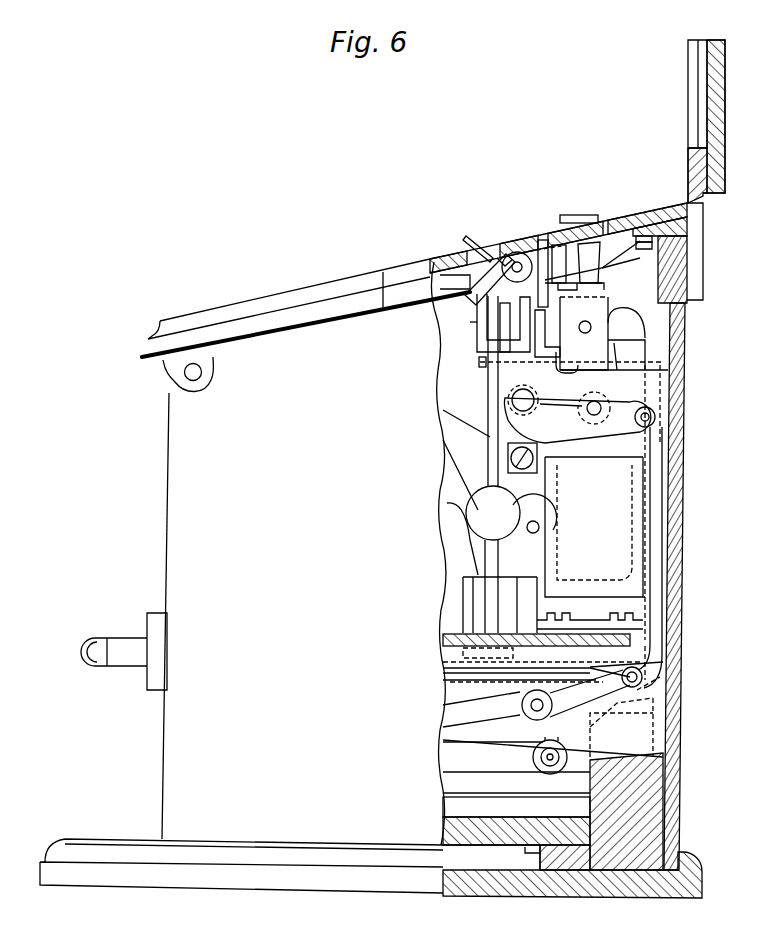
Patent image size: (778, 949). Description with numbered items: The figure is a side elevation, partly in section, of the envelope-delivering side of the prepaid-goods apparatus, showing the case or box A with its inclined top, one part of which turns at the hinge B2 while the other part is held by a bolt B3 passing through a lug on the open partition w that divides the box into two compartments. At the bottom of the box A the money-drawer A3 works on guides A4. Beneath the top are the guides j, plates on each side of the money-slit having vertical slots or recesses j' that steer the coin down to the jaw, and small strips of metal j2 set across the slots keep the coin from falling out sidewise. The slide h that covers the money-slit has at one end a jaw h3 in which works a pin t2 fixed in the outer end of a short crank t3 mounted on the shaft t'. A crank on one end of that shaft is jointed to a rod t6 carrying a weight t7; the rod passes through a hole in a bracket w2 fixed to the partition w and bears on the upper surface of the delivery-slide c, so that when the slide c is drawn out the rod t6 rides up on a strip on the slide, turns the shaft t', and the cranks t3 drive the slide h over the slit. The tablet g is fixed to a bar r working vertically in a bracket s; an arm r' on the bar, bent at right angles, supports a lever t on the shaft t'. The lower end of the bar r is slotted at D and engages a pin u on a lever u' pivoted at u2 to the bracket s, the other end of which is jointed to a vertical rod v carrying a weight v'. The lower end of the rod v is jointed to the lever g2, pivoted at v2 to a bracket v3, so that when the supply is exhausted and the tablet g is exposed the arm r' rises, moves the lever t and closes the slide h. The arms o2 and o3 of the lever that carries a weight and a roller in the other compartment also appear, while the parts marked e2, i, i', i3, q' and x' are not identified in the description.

The case or box A is at (382, 469).
The money-drawer A3 is at (516, 821).
The guides A4 is at (626, 811).
The hinge B2 is at (192, 380).
The bolt B3 is at (479, 362).
The delivery-slide c is at (456, 622).
The slot D is at (548, 392).
The plate piece e2 is at (642, 262).
The tablet g is at (545, 240).
The lever g2 is at (553, 731).
The slide h is at (503, 258).
The jaws h3 is at (476, 252).
The rack bar i is at (590, 611).
The slide plate i' is at (584, 333).
The pin i3 is at (585, 338).
The guides j is at (589, 262).
The vertical slots or recesses j' is at (573, 267).
The strips of metal j2 is at (603, 281).
The arm or extension o2 is at (458, 523).
The arm or extension o3 is at (475, 566).
The wedge q' is at (466, 460).
The bar or rod r is at (547, 333).
The extension or arm r' is at (471, 326).
The bracket s is at (577, 394).
The lever t is at (478, 279).
The shaft t' is at (503, 323).
The pins t2 is at (459, 272).
The short levers or cranks t3 is at (524, 253).
The rod t6 is at (490, 391).
The weight t7 is at (511, 513).
The pin u is at (523, 394).
The lever u' is at (561, 402).
The pivot u2 is at (597, 403).
The vertical rod v is at (573, 525).
The weight v' is at (576, 520).
The pivot v2 is at (582, 693).
The bracket v3 is at (625, 717).
The open partition w is at (622, 279).
The bracket w2 is at (500, 586).
The cam x' is at (614, 339).